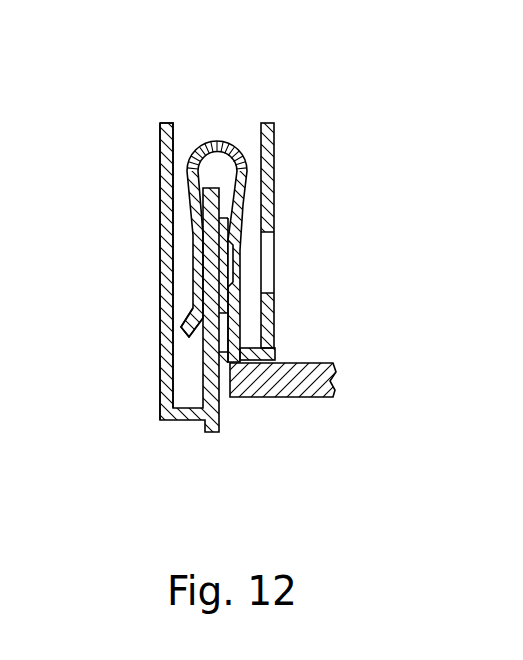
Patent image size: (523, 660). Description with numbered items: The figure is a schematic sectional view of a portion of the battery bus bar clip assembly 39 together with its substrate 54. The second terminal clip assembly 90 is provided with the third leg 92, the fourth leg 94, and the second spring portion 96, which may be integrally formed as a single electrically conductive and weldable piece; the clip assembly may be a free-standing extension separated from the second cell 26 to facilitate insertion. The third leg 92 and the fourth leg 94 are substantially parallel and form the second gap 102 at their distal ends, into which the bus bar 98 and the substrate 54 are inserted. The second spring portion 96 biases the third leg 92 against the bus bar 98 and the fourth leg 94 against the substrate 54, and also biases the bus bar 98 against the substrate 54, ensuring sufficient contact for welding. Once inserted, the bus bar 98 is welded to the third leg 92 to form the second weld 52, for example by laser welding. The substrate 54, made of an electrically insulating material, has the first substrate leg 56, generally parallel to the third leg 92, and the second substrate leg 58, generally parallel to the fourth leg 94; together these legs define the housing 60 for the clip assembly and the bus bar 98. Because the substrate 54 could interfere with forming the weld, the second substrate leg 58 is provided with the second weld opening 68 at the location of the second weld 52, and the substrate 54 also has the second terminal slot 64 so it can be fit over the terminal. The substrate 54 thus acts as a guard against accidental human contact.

The second cell 26 is at (303, 365).
The battery bus bar clip assembly 39 is at (261, 259).
The second weld 52 is at (268, 268).
The substrate 54 is at (261, 295).
The first substrate leg 56 is at (261, 280).
The second substrate leg 58 is at (160, 170).
The housing 60 is at (261, 225).
The second terminal slot 64 is at (277, 338).
The second weld opening 68 is at (267, 277).
The second terminal clip assembly 90 is at (196, 133).
The third leg 92 is at (243, 340).
The fourth leg 94 is at (193, 262).
The second spring portion 96 is at (219, 142).
The bus bar 98 is at (232, 242).
The second gap 102 is at (200, 330).